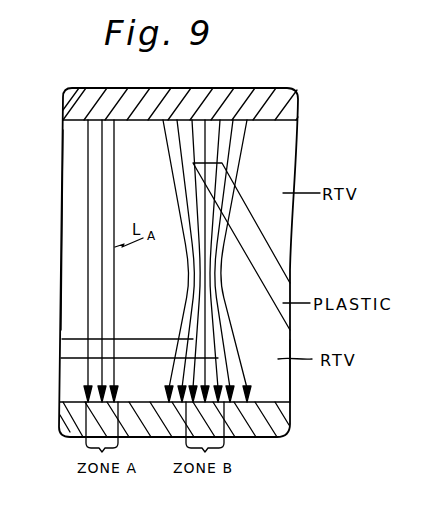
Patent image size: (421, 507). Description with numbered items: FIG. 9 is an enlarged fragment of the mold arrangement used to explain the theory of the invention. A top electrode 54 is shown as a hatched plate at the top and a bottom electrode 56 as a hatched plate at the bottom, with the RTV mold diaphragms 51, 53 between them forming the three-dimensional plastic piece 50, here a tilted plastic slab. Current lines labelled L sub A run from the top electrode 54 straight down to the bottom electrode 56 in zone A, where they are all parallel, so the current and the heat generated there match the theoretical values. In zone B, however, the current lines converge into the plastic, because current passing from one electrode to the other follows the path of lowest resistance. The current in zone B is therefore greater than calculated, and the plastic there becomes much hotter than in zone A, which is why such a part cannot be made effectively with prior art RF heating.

The three-dimensional piece 50 is at (70, 345).
The mold diaphragm 51 is at (278, 378).
The mold diaphragm 53 is at (77, 190).
The top electrode 54 is at (287, 106).
The bottom electrode 56 is at (272, 420).